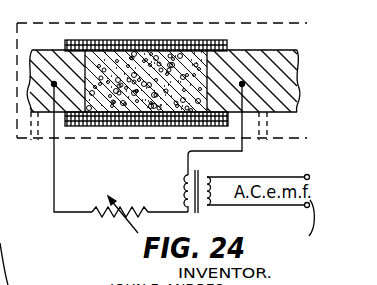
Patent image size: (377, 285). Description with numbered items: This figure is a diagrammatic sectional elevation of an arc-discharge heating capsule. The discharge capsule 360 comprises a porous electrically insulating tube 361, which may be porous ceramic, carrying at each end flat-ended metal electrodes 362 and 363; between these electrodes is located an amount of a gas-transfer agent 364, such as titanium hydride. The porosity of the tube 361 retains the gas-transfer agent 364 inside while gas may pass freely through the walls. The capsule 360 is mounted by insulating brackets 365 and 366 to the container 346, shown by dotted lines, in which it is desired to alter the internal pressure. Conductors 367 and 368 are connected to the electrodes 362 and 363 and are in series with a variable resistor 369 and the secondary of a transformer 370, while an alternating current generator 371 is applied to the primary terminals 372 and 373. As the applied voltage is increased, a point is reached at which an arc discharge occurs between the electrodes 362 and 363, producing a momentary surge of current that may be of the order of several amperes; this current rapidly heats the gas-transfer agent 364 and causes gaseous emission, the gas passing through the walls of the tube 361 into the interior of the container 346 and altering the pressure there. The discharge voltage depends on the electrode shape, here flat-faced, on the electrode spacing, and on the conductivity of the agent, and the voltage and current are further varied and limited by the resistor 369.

The container 346 is at (129, 24).
The discharge capsule 360 is at (238, 45).
The porous electrically insulating tube 361 is at (122, 40).
The flat-ended metal electrode 362 is at (272, 118).
The flat-ended metal electrode 363 is at (58, 48).
The gas-transfer agent 364 is at (150, 58).
The insulating bracket 365 is at (37, 140).
The insulating bracket 366 is at (267, 140).
The conductor 367 is at (55, 191).
The conductor 368 is at (237, 127).
The variable resistor 369 is at (122, 206).
The transformer 370 is at (205, 207).
The alternating current generator 371 is at (310, 233).
The primary terminal 372 is at (305, 175).
The primary terminal 373 is at (306, 224).